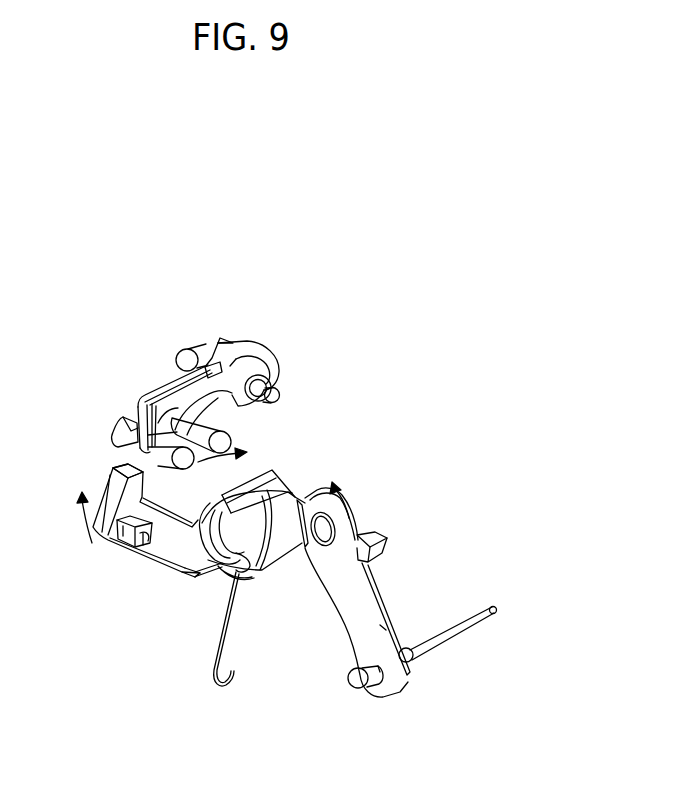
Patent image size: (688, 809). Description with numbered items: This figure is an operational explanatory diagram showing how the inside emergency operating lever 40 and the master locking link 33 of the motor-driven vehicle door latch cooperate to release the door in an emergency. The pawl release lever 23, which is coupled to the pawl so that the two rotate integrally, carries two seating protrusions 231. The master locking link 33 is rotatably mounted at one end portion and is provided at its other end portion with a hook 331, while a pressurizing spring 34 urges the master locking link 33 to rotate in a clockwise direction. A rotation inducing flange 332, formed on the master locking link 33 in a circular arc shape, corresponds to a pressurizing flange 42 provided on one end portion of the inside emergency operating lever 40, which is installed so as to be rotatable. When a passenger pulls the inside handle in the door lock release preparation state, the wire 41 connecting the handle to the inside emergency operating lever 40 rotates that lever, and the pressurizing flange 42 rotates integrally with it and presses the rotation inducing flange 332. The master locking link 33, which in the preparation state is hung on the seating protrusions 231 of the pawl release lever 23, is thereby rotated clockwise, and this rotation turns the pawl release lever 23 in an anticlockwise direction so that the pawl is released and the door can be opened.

The pawl release lever 23 is at (245, 352).
The seating protrusions 231 is at (184, 434).
The master locking link 33 is at (153, 552).
The hook 331 is at (130, 482).
The rotation inducing flange 332 is at (197, 576).
The pressurizing spring 34 is at (223, 688).
The inside emergency operating lever 40 is at (395, 684).
The wire 41 is at (462, 628).
The pressurizing flange 42 is at (278, 477).